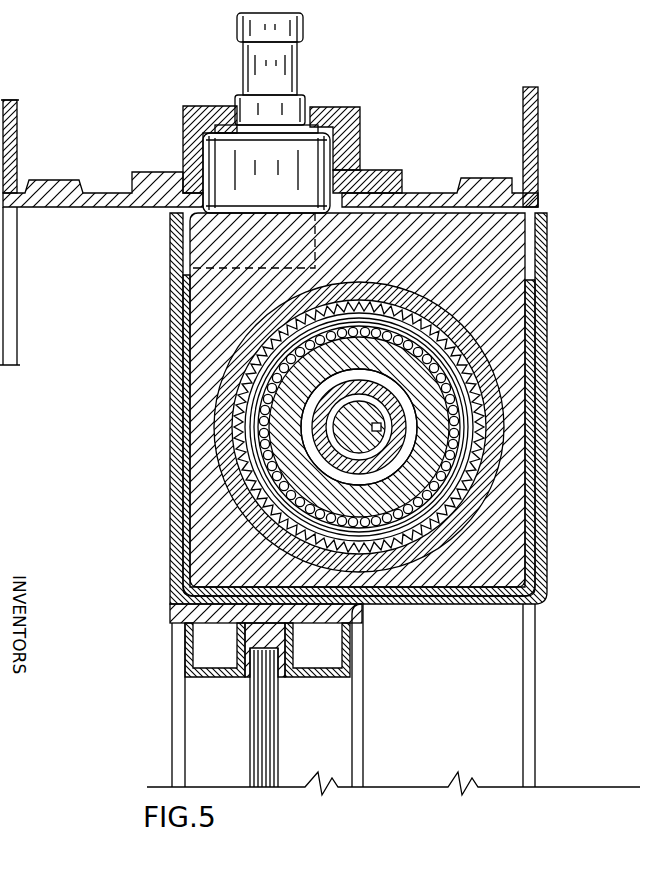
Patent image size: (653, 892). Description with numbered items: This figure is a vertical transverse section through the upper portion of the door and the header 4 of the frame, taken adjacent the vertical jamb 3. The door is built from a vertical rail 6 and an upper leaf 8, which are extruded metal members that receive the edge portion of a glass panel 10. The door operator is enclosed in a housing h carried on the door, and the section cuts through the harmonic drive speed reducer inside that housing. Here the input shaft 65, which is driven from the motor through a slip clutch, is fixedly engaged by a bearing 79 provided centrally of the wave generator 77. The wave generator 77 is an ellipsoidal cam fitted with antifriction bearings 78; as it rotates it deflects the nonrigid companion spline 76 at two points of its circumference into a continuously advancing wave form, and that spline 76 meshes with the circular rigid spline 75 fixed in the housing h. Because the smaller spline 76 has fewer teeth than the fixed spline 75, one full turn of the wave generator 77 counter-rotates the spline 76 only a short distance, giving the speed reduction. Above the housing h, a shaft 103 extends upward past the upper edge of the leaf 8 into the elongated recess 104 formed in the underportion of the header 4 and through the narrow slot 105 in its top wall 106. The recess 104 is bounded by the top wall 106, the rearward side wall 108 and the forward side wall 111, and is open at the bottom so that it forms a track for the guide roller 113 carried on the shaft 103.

The vertical jamb 3 is at (512, 670).
The header 4 is at (540, 105).
The vertical rail 6 is at (363, 765).
The upper leaf 8 is at (545, 222).
The housing h is at (545, 250).
The glass panel 10 is at (250, 790).
The input shaft 65 is at (400, 407).
The circular rigid spline 75 is at (473, 337).
The companion spline 76 is at (470, 437).
The wave generator 77 is at (473, 388).
The antifriction bearings 78 is at (463, 465).
The bearing 79 is at (403, 398).
The shaft 103 is at (302, 58).
The elongated recess 104 is at (355, 113).
The narrow slot 105 is at (307, 107).
The top wall 106 is at (230, 107).
The rearward side wall 108 is at (360, 165).
The forward side wall 111 is at (180, 143).
The guide roller 113 is at (332, 150).